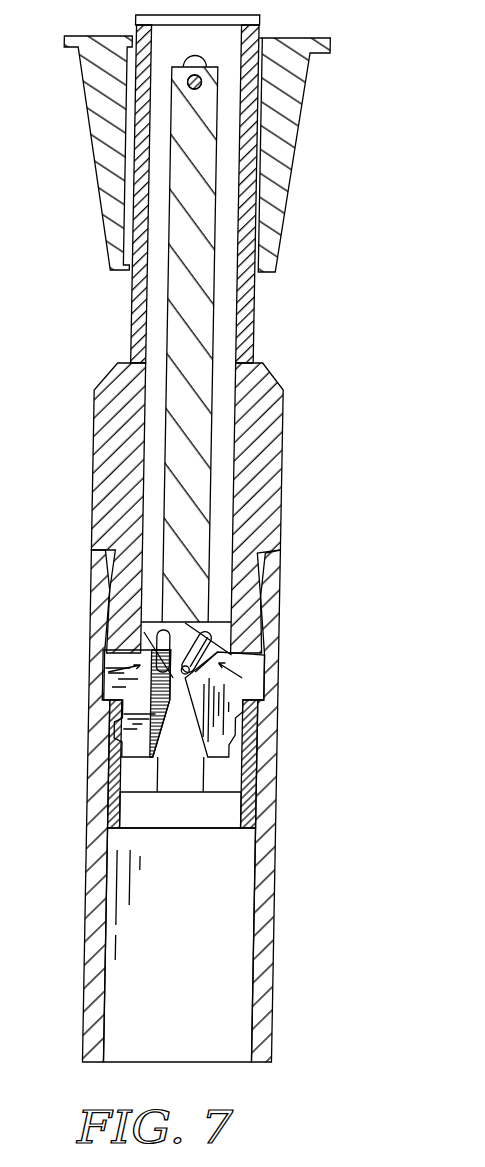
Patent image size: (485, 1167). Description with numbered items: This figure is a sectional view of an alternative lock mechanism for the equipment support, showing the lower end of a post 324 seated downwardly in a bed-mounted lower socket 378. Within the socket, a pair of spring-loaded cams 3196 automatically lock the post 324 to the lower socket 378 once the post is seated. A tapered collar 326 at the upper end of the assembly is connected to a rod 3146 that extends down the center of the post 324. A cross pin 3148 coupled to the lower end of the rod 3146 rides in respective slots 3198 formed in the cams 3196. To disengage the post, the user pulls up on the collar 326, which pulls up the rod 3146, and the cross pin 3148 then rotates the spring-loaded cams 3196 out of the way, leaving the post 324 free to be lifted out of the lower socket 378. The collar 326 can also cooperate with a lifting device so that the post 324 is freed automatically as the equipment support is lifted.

The tapered collar 326 is at (283, 160).
The post 324 is at (267, 423).
The rod 3146 is at (193, 491).
The slots 3198 is at (207, 638).
The cross pin 3148 is at (205, 651).
The cams 3196 is at (245, 687).
The lower socket 378 is at (275, 845).